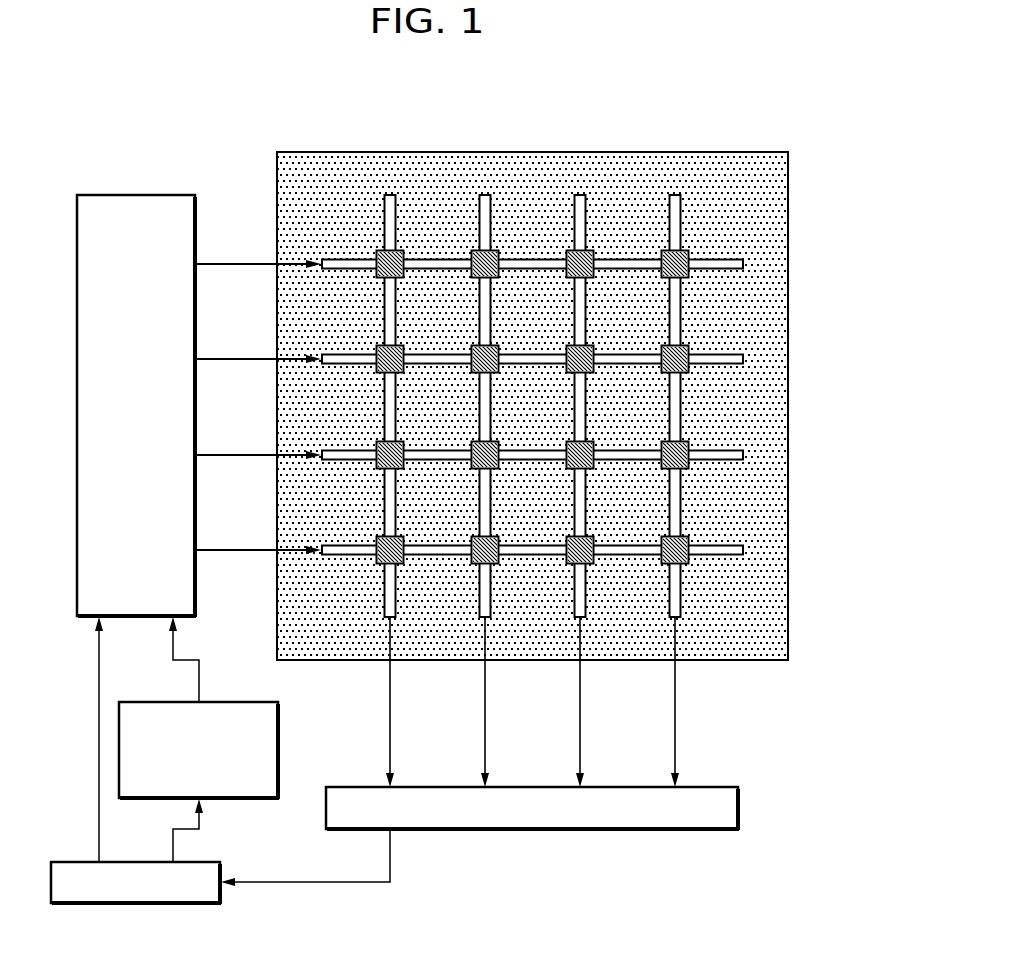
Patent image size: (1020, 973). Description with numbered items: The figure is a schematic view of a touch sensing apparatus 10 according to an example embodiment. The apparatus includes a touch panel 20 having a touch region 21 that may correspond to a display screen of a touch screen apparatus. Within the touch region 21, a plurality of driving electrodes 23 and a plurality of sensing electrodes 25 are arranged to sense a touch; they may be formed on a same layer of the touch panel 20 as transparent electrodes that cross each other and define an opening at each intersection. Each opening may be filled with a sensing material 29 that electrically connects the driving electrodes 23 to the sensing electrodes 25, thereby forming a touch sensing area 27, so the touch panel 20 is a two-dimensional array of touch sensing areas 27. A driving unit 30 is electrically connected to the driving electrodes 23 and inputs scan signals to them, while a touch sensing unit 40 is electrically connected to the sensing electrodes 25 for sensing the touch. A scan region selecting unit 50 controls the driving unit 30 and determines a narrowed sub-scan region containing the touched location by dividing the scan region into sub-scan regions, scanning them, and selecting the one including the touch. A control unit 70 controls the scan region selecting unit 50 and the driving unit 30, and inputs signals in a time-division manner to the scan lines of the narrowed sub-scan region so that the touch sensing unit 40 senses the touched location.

The touch sensing apparatus 10 is at (186, 124).
The touch panel 20 is at (532, 381).
The touch region 21 is at (742, 204).
The driving electrodes 23 is at (322, 258).
The sensing electrodes 25 is at (390, 195).
The touch sensing area 27 is at (700, 286).
The sensing material 29 is at (689, 252).
The driving unit 30 is at (124, 195).
The touch sensing unit 40 is at (710, 787).
The scan region selecting unit 50 is at (282, 728).
The control unit 70 is at (137, 905).